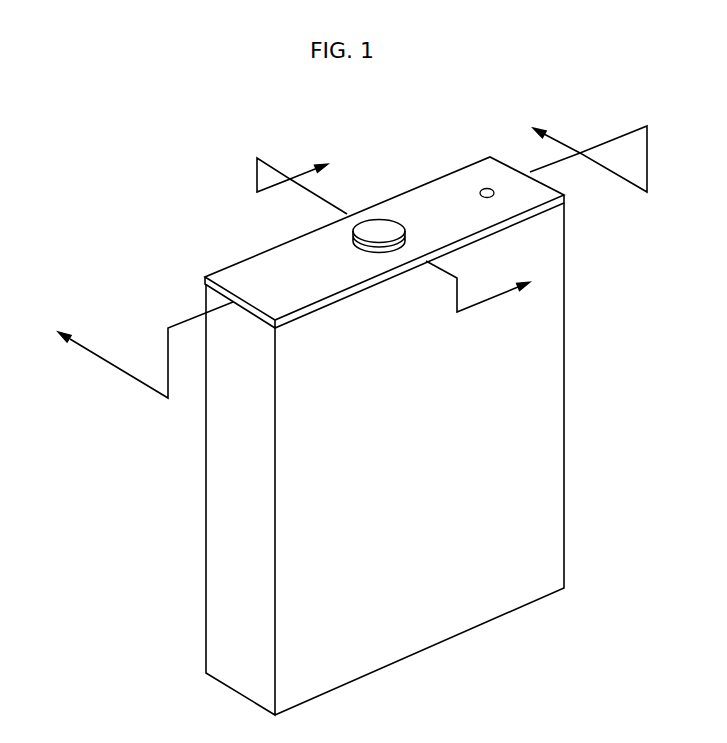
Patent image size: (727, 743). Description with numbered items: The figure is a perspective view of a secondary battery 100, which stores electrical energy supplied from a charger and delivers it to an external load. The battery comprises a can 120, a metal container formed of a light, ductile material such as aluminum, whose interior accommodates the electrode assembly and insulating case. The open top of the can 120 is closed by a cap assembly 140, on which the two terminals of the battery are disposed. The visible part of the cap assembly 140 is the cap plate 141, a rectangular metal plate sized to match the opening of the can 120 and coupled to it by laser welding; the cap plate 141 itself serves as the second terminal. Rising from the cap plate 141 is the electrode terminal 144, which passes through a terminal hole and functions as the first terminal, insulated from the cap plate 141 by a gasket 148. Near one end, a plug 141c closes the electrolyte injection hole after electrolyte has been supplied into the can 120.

The secondary battery 100 is at (100, 130).
The can 120 is at (228, 483).
The cap assembly 140 is at (447, 182).
The cap plate 141 is at (253, 263).
The plug 141c is at (485, 188).
The electrode terminal 144 is at (386, 224).
The gasket 148 is at (352, 237).